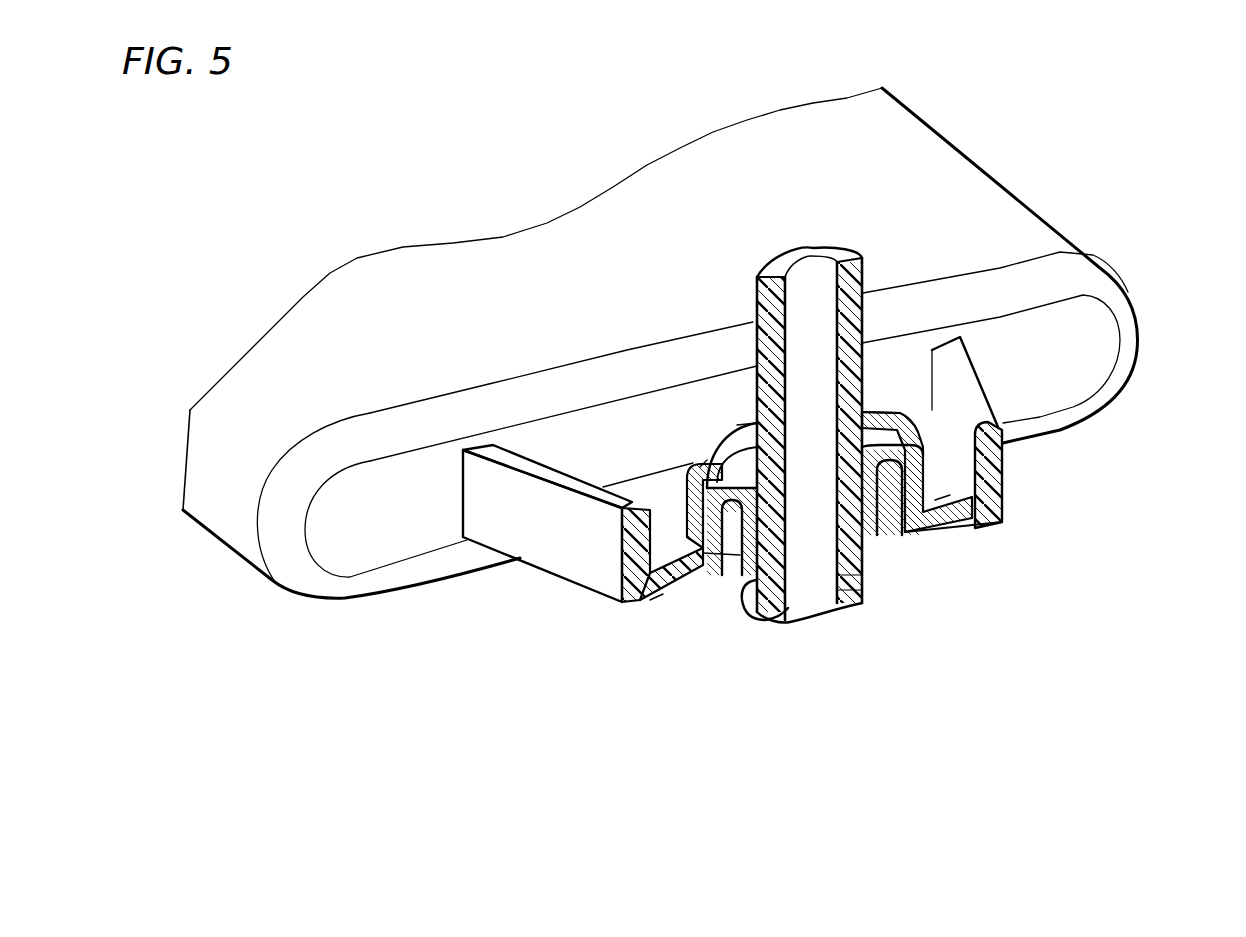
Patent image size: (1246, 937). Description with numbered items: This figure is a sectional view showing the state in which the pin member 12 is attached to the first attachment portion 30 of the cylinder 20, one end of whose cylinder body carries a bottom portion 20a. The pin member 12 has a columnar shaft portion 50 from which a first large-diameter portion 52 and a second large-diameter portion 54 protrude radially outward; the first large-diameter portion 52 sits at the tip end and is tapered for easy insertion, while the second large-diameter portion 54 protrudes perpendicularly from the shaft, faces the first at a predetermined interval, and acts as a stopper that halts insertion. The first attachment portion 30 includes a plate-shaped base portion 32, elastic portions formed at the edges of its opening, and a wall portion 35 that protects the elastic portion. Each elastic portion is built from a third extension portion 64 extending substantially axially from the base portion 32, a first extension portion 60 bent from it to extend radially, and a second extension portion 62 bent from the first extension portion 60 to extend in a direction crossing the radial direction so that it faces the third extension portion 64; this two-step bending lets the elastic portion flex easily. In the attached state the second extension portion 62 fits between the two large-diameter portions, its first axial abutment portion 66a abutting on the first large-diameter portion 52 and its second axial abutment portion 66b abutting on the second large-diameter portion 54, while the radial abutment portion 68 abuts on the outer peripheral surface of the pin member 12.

The pin member 12 is at (789, 250).
The cylinder 20 is at (905, 138).
The bottom portion 20a is at (1094, 325).
The first attachment portion 30 is at (1007, 472).
The base portion 32 is at (970, 523).
The wall portion 35 is at (545, 548).
The shaft portion 50 is at (770, 515).
The first large-diameter portion 52 is at (877, 583).
The second large-diameter portion 54 is at (737, 423).
The first extension portion 60 is at (702, 467).
The second extension portion 62 is at (743, 573).
The third extension portion 64 is at (663, 597).
The first axial abutment portion 66a is at (775, 607).
The second axial abutment portion 66b is at (720, 428).
The radial abutment portion 68 is at (740, 557).